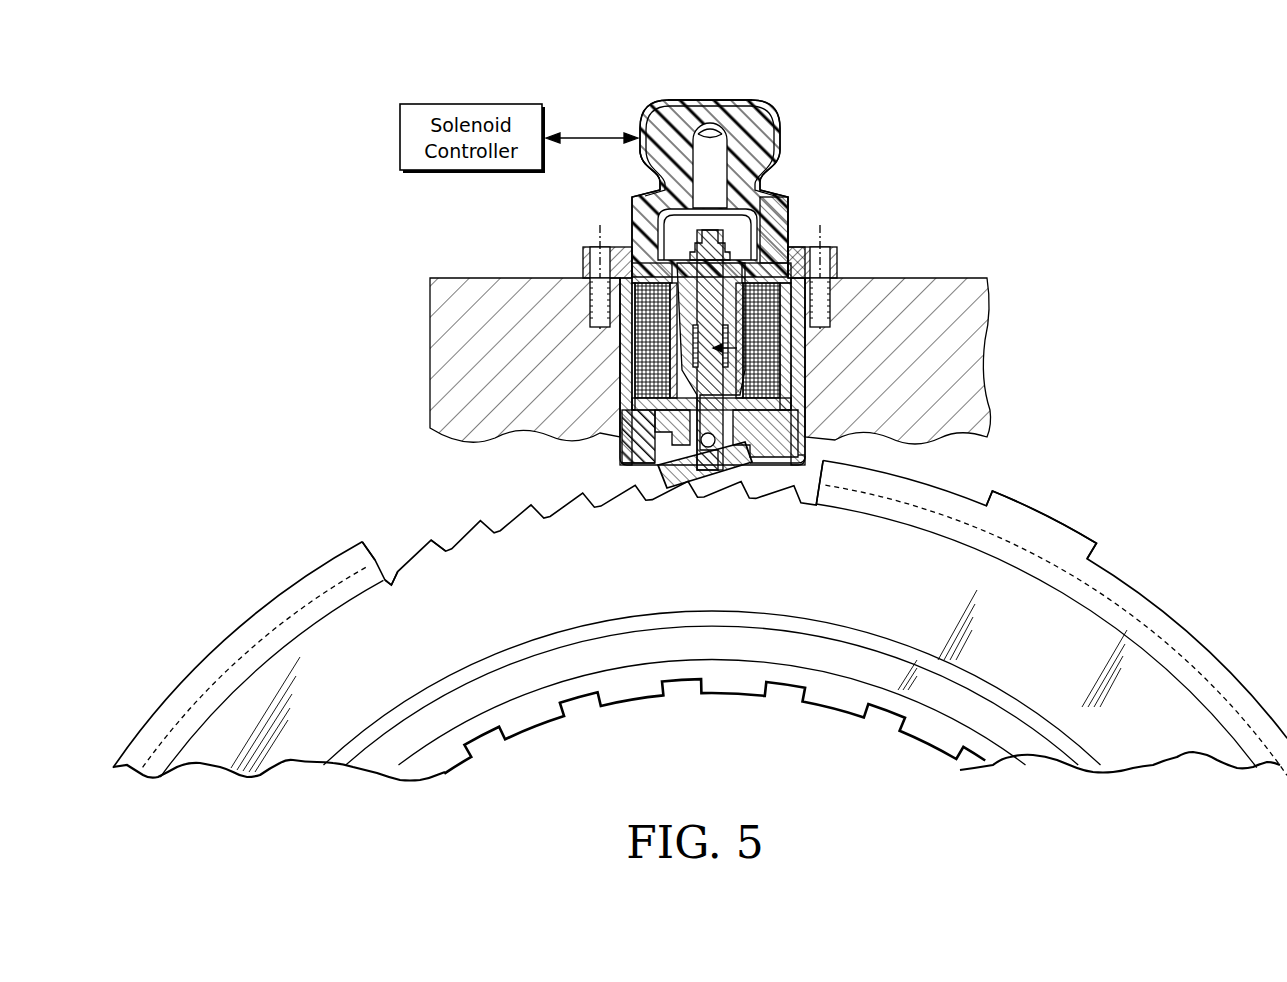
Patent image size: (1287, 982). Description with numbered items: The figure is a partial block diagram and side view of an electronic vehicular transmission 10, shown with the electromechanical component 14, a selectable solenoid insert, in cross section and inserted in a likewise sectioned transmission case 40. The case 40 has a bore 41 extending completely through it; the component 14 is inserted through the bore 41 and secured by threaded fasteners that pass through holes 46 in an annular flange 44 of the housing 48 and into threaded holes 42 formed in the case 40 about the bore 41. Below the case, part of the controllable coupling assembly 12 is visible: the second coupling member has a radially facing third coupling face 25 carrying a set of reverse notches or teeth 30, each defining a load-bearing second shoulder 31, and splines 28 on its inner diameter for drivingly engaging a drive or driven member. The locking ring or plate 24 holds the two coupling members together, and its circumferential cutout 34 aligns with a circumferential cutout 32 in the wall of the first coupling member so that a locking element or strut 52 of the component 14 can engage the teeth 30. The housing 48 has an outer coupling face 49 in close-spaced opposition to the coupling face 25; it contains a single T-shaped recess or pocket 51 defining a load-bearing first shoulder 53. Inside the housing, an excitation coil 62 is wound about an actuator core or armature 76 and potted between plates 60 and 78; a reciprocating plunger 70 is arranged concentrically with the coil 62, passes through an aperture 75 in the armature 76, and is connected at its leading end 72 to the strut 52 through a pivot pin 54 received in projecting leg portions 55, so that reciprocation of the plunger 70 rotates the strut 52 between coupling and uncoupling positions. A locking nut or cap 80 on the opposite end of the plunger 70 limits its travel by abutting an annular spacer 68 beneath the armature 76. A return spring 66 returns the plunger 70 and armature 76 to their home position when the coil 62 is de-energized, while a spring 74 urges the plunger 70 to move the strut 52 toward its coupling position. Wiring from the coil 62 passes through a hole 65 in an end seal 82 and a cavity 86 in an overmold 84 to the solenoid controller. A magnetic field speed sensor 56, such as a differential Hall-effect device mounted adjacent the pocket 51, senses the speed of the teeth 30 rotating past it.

The electronic vehicular transmission 10 is at (980, 156).
The controllable coupling assembly 12 is at (1120, 570).
The electromechanical component 14 is at (784, 104).
The locking ring 24 is at (932, 555).
The third coupling face 25 is at (398, 582).
The splines 28 is at (530, 728).
The teeth 30 is at (600, 532).
The second shoulder 31 is at (457, 537).
The circumferential cutout 32 is at (372, 560).
The circumferential cutout 34 is at (466, 553).
The transmission case 40 is at (932, 278).
The bore 41 is at (622, 377).
The threaded holes 42 is at (828, 298).
The annular flange 44 is at (770, 248).
The holes 46 is at (600, 250).
The housing 48 is at (805, 348).
The outer coupling face 49 is at (822, 482).
The T-shaped recess 51 is at (700, 442).
The locking element 52 is at (660, 480).
The first shoulder 53 is at (780, 470).
The pivot pin 54 is at (735, 432).
The leg portions 55 is at (830, 457).
The magnetic field speed sensor 56 is at (622, 434).
The plate 60 is at (773, 408).
The excitation coil 62 is at (642, 393).
The hole 65 is at (677, 127).
The return spring 66 is at (637, 393).
The annular spacer 68 is at (660, 186).
The reciprocating plunger 70 is at (763, 353).
The leading end 72 is at (620, 450).
The spring 74 is at (690, 362).
The aperture 75 is at (637, 290).
The actuator core 76 is at (792, 262).
The plate 78 is at (633, 200).
The locking nut 80 is at (727, 240).
The end seal 82 is at (760, 226).
The overmold 84 is at (707, 85).
The cavity 86 is at (723, 128).